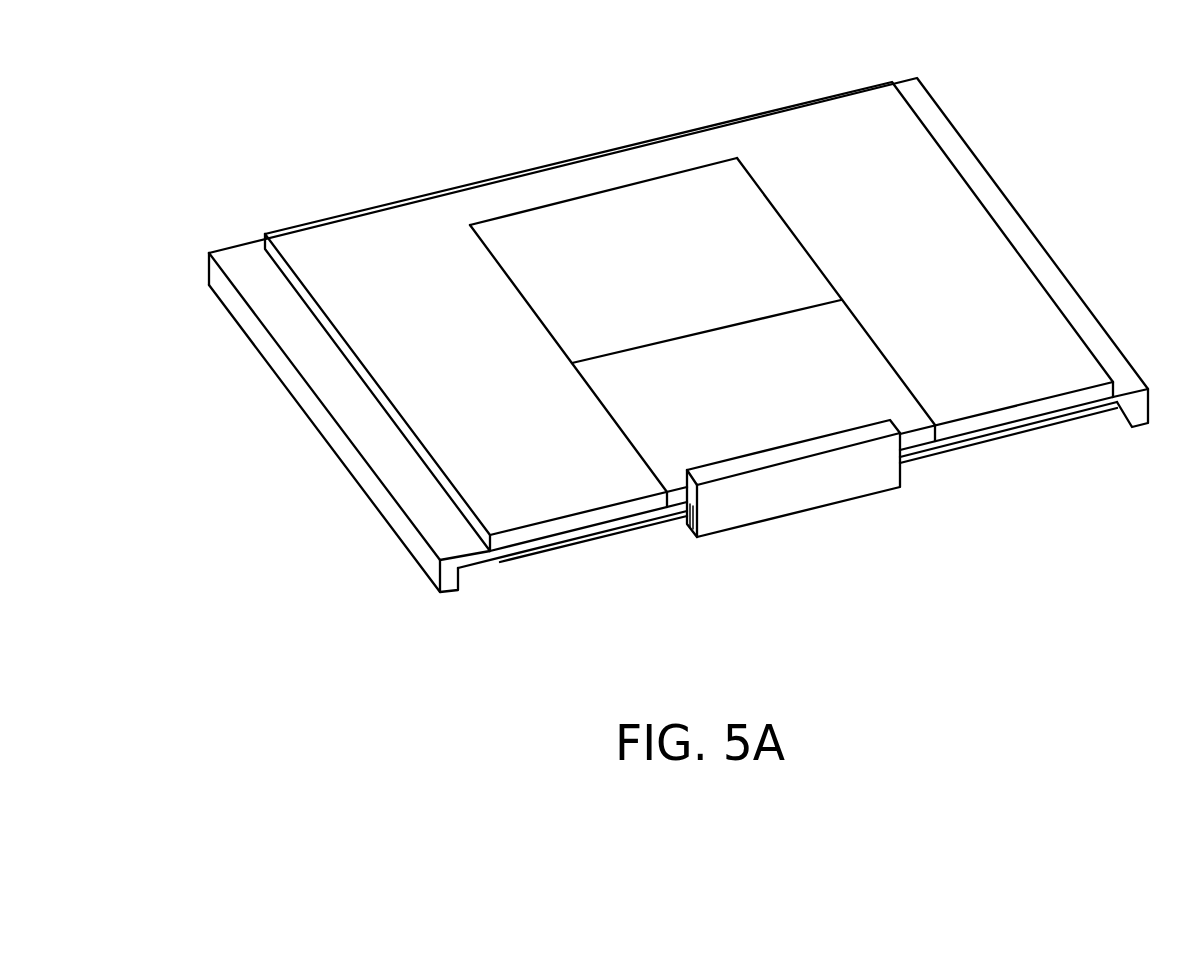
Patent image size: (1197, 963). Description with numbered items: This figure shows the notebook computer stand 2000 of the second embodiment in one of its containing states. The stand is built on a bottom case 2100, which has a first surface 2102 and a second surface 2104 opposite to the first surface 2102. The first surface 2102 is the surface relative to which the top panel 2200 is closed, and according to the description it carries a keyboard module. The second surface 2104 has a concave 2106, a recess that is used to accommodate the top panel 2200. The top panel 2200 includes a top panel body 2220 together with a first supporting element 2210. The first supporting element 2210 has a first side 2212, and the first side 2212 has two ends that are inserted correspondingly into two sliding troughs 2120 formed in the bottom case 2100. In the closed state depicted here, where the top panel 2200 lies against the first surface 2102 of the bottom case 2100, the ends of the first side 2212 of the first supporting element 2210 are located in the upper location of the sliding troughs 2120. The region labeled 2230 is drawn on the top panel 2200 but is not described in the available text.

The notebook computer stand 2000 is at (1179, 656).
The bottom case 2100 is at (942, 130).
The first surface 2102 is at (246, 273).
The second surface 2104 is at (333, 452).
The concave 2106 is at (513, 562).
The sliding troughs 2120 is at (686, 526).
The top panel 2200 is at (678, 61).
The first supporting element 2210 is at (660, 370).
The first side 2212 is at (913, 420).
The top panel body 2220 is at (403, 222).
The rectangular region of plate 2230 is at (532, 230).